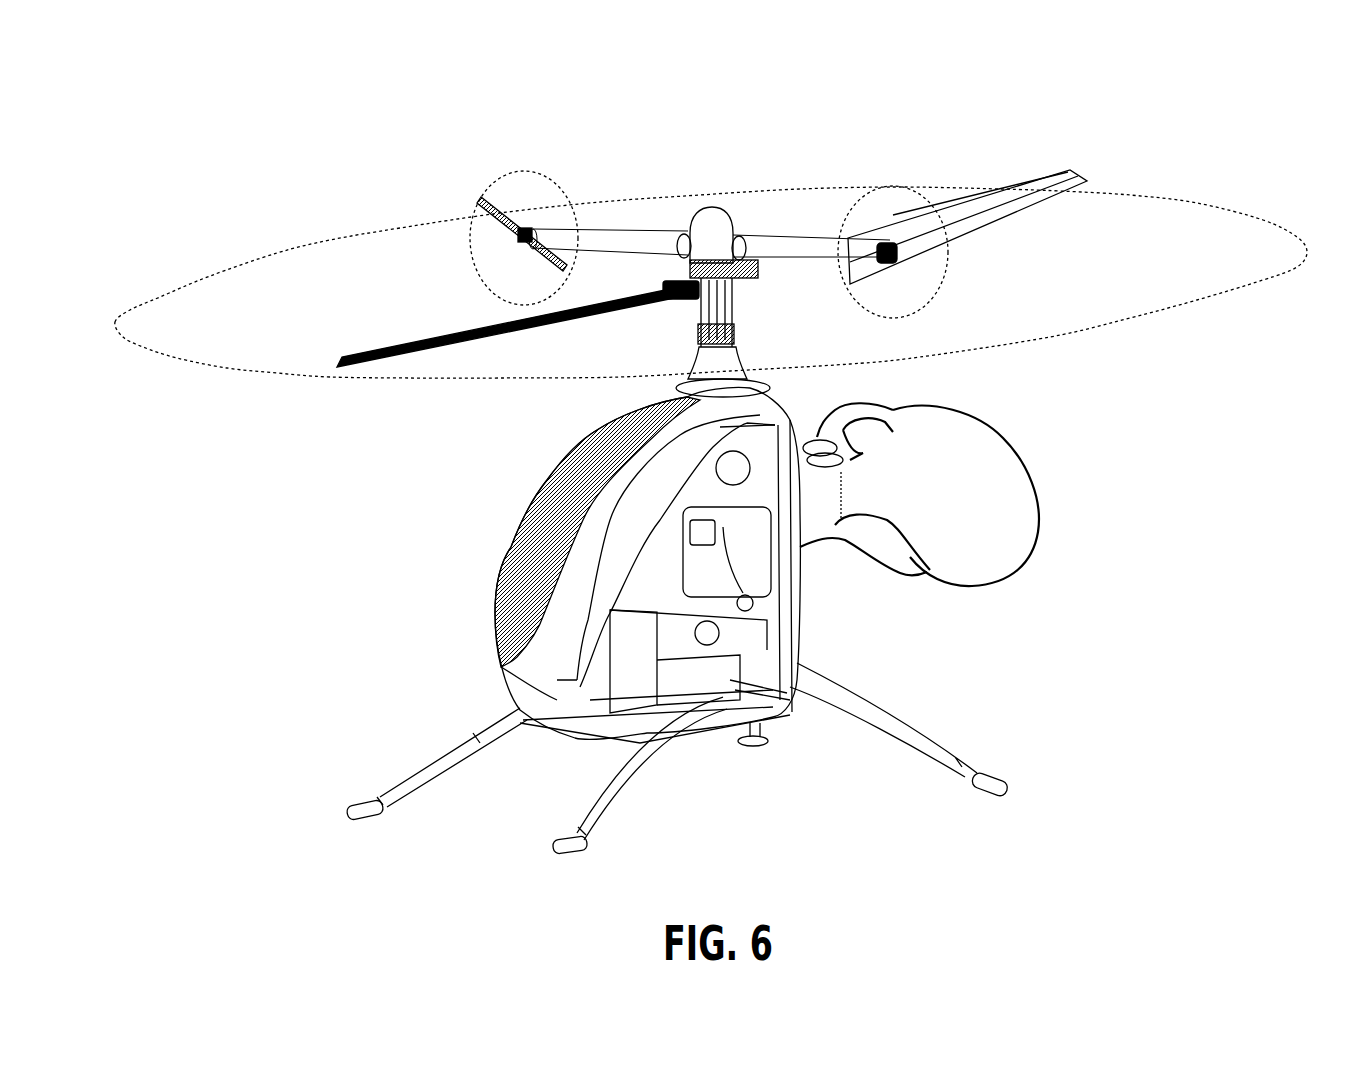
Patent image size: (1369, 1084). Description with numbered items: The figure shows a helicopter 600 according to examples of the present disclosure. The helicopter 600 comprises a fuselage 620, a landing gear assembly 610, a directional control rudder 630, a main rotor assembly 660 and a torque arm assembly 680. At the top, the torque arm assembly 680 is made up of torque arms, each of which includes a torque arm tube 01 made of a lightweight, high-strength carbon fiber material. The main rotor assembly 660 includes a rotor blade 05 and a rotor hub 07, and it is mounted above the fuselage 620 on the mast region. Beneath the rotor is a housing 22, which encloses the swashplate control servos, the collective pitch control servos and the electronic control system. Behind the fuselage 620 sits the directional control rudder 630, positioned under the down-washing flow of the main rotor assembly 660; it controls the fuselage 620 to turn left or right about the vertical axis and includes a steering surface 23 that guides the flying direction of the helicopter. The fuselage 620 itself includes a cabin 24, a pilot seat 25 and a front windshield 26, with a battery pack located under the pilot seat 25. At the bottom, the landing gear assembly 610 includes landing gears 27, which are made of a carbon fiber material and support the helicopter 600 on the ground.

The helicopter 600 is at (700, 451).
The torque arm assembly 680 is at (726, 276).
The main rotor assembly 660 is at (1012, 167).
The rotor blade 05 is at (357, 352).
The torque arm tube 01 is at (627, 245).
The rotor hub 07 is at (683, 285).
The housing 22 is at (738, 348).
The steering surface 23 is at (985, 449).
The cabin 24 is at (800, 568).
The directional control rudder 630 is at (1030, 512).
The fuselage 620 is at (719, 567).
The front windshield 26 is at (545, 507).
The pilot seat 25 is at (737, 673).
The landing gears 27 is at (437, 762).
The landing gear assembly 610 is at (646, 765).